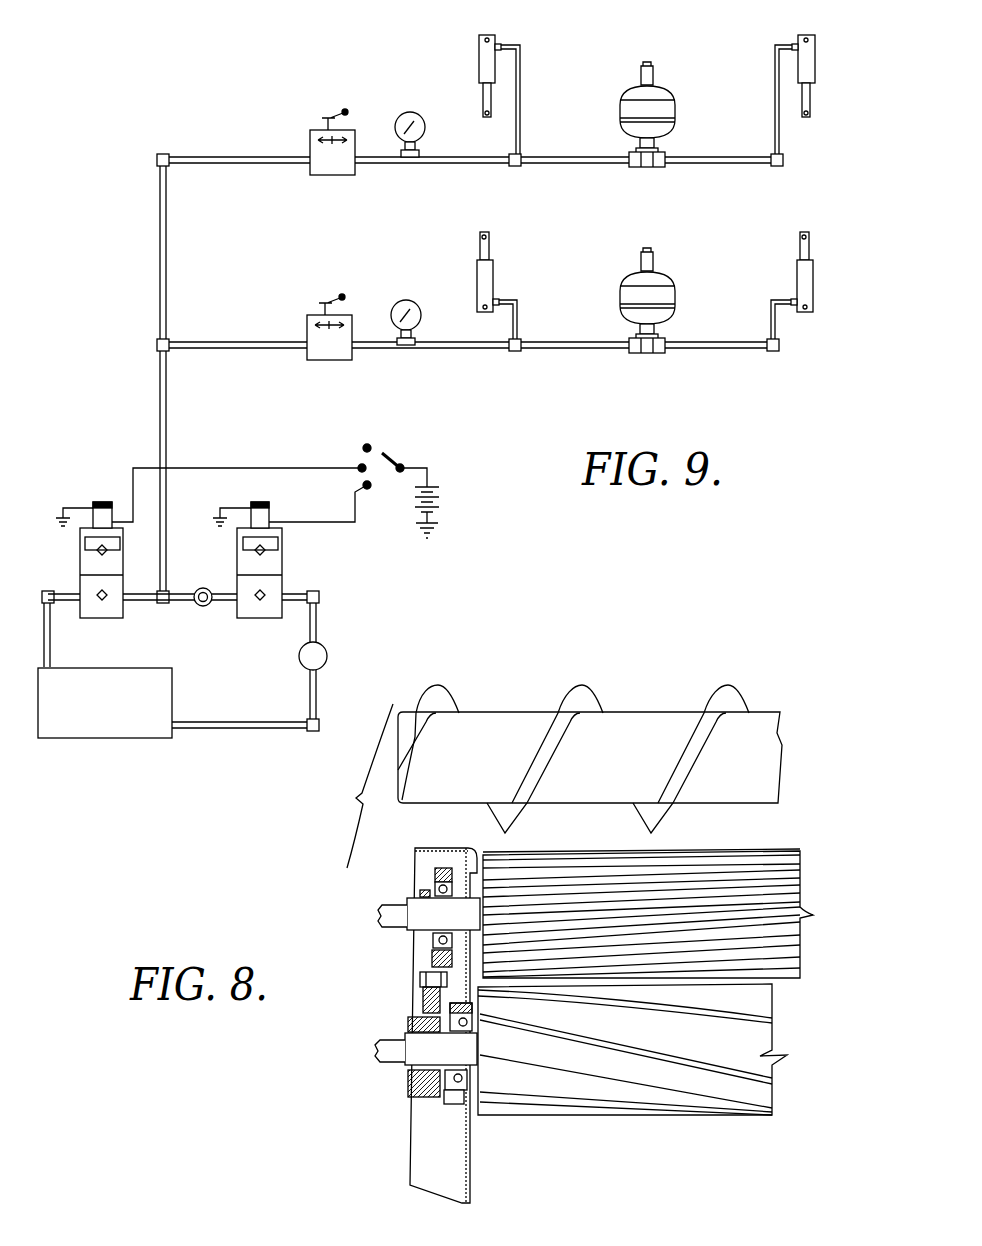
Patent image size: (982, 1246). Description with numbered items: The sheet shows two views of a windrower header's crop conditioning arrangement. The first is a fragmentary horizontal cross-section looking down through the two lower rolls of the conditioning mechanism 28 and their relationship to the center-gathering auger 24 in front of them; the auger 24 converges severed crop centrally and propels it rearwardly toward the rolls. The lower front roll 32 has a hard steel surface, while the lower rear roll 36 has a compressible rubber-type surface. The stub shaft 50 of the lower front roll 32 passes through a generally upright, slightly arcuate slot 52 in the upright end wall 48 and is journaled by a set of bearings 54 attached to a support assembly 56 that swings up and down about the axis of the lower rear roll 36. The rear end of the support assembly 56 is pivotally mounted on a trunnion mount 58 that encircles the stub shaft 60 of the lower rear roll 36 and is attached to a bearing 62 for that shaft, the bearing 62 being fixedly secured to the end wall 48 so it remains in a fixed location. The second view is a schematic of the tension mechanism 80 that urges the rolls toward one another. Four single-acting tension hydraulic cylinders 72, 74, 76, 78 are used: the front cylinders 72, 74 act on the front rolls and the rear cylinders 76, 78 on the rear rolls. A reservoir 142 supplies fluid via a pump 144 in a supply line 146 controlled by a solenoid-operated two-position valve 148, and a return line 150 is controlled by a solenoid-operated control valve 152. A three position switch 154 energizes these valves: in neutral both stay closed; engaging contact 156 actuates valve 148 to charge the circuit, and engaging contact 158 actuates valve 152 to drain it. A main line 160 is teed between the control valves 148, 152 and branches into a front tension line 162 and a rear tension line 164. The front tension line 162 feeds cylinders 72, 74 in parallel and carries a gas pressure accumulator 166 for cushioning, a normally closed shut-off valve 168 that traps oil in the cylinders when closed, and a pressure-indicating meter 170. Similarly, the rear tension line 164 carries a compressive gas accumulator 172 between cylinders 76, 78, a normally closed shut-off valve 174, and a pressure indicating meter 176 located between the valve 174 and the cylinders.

In FIG. 8, the auger 24 is at (644, 716).
In FIG. 8, the conditioning mechanism 28 is at (791, 840).
In FIG. 8, the lower front roll 32 is at (610, 843).
In FIG. 8, the lower rear roll 36 is at (690, 1133).
In FIG. 8, the end wall 48 is at (470, 1168).
In FIG. 8, the stub shaft 50 is at (411, 929).
In FIG. 8, the slot 52 is at (462, 931).
In FIG. 8, the bearings 54 is at (435, 885).
In FIG. 8, the support assembly 56 is at (423, 997).
In FIG. 8, the trunnion mount 58 is at (410, 1080).
In FIG. 8, the stub shaft 60 is at (411, 1040).
In FIG. 8, the bearing 62 is at (475, 1023).
In FIG. 9, the tension hydraulic cylinder 72 is at (493, 277).
In FIG. 9, the tension hydraulic cylinder 74 is at (798, 277).
In FIG. 9, the tension hydraulic cylinder 76 is at (483, 67).
In FIG. 9, the tension hydraulic cylinder 78 is at (817, 43).
In FIG. 9, the tension mechanism 80 is at (437, 327).
In FIG. 9, the reservoir 142 is at (100, 738).
In FIG. 9, the pump 144 is at (299, 663).
In FIG. 9, the supply line 146 is at (316, 626).
In FIG. 9, the solenoid-operated two-position valve 148 is at (282, 566).
In FIG. 9, the return line 150 is at (50, 632).
In FIG. 9, the solenoid-operated control valve 152 is at (80, 569).
In FIG. 9, the three position switch 154 is at (303, 482).
In FIG. 9, the contact 156 is at (371, 489).
In FIG. 9, the contact 158 is at (359, 462).
In FIG. 9, the main line 160 is at (160, 397).
In FIG. 9, the front tension line 162 is at (241, 342).
In FIG. 9, the rear tension line 164 is at (272, 164).
In FIG. 9, the gas pressure accumulator 166 is at (658, 283).
In FIG. 9, the shut-off valve 168 is at (318, 314).
In FIG. 9, the pressure-indicating meter 170 is at (404, 299).
In FIG. 9, the compressive gas accumulator 172 is at (637, 97).
In FIG. 9, the shut-off valve 174 is at (320, 129).
In FIG. 9, the pressure indicating meter 176 is at (403, 112).